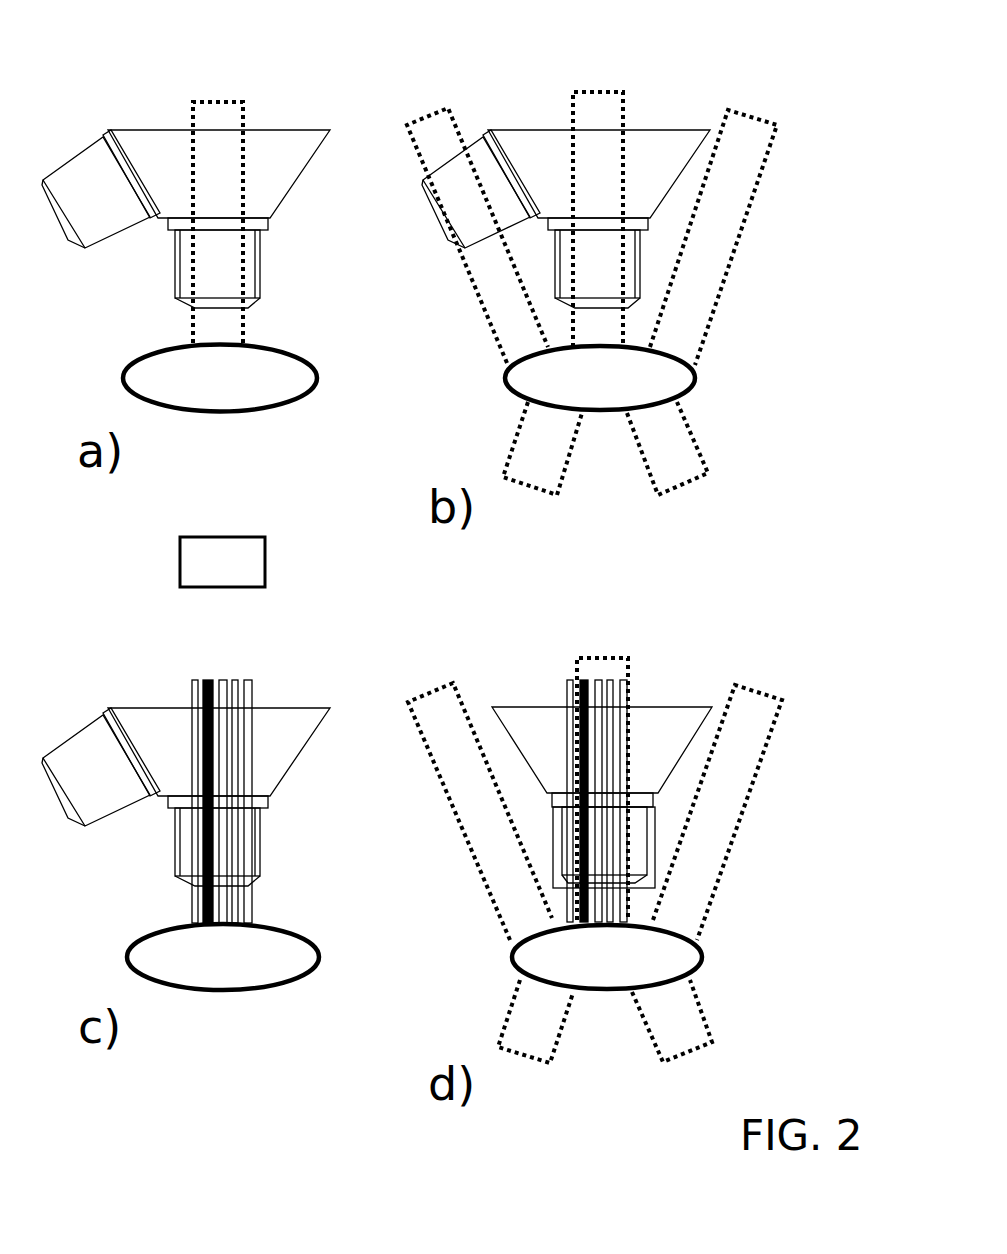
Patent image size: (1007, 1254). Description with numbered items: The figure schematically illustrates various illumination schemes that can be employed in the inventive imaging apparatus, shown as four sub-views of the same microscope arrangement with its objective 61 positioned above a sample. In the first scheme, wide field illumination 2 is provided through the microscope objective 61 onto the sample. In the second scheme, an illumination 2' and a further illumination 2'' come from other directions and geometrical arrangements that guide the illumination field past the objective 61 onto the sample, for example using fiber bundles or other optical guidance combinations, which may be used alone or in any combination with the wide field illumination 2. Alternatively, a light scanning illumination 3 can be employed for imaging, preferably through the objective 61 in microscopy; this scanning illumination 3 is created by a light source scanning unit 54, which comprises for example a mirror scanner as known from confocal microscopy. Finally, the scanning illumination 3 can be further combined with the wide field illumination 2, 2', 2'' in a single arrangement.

The wide field illumination 2 is at (429, 463).
The illumination from other direction 2' is at (609, 484).
The illumination from other direction 2'' is at (620, 722).
The light scanning illumination 3 is at (258, 678).
The light source scanning unit 54 is at (197, 565).
The microscope objective 61 is at (252, 273).